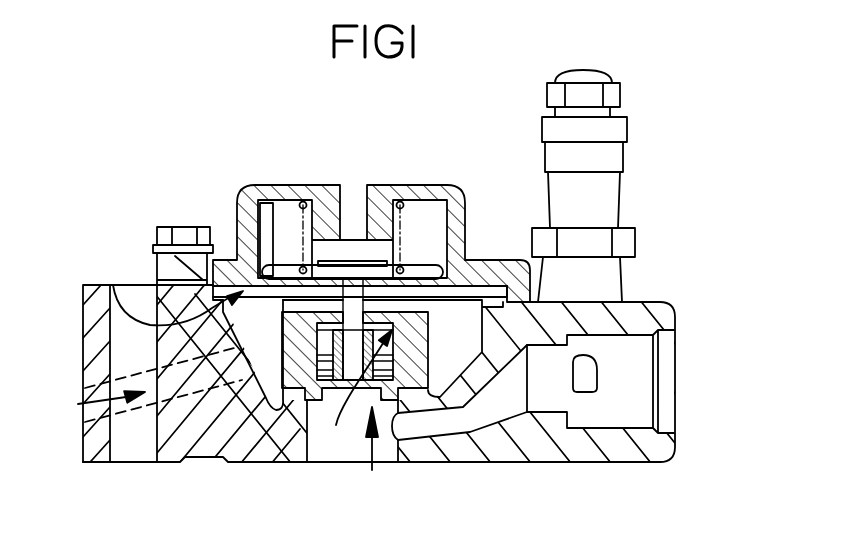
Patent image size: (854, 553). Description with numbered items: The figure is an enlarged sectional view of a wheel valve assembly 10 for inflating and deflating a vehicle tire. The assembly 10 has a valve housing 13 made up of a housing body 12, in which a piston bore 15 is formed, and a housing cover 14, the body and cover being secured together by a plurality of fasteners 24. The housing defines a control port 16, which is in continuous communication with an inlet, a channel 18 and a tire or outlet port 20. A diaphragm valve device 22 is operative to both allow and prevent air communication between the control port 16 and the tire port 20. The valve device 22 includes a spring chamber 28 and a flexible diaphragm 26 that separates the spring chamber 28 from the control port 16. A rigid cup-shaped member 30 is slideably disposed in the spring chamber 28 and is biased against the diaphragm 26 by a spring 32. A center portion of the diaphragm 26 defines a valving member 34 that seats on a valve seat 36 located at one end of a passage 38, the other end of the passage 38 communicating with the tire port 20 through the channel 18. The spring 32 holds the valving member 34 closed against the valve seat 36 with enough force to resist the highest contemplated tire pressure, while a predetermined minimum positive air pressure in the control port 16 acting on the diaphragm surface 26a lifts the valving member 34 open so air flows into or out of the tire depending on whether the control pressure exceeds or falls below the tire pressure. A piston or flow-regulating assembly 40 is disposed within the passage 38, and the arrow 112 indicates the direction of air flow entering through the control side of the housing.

The wheel valve assembly 10 is at (481, 94).
The housing body 12 is at (635, 311).
The valve housing 13 is at (628, 480).
The housing cover 14 is at (448, 196).
The piston bore 15 is at (336, 425).
The control port 16 is at (274, 410).
The channel 18 is at (432, 432).
The tire port 20 is at (678, 360).
The valve device 22 is at (281, 188).
The fasteners 24 is at (178, 228).
The flexible diaphragm 26 is at (215, 292).
The diaphragm surface 26a is at (113, 285).
The spring chamber 28 is at (423, 223).
The rigid cup-shaped member 30 is at (384, 292).
The spring 32 is at (401, 202).
The valving member 34 is at (414, 278).
The valve seat 36 is at (360, 313).
The passage 38 is at (352, 318).
The piston or flow-regulating assembly 40 is at (372, 470).
The flow direction 112 is at (139, 385).